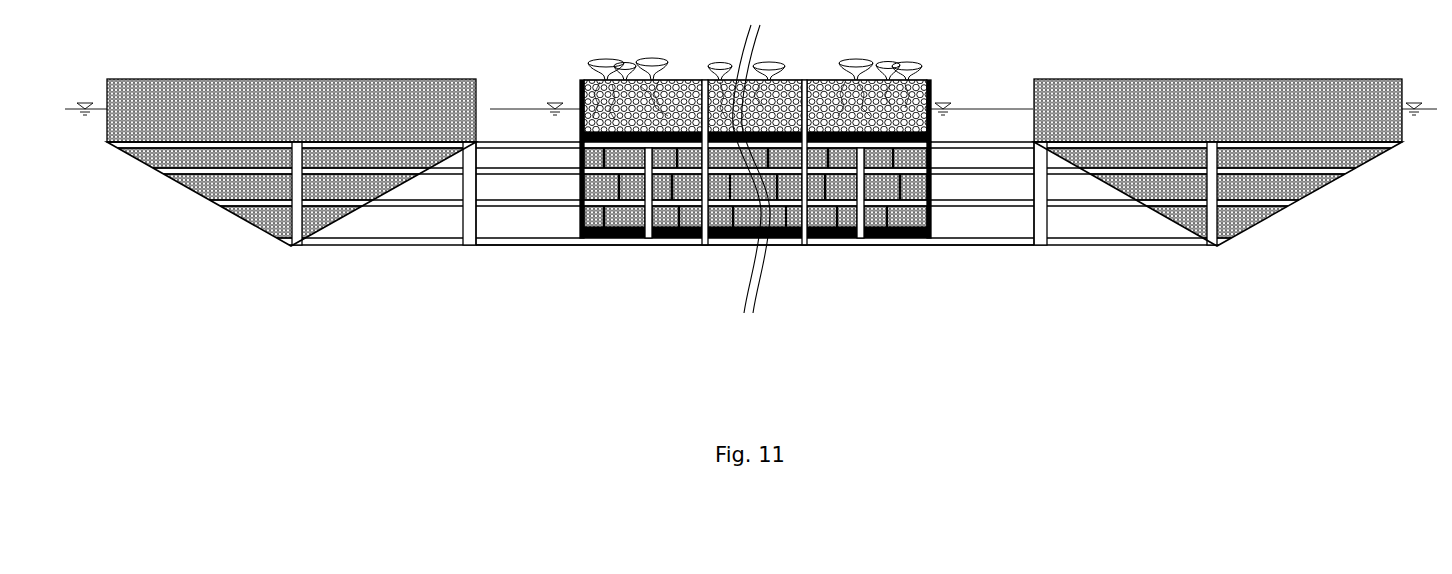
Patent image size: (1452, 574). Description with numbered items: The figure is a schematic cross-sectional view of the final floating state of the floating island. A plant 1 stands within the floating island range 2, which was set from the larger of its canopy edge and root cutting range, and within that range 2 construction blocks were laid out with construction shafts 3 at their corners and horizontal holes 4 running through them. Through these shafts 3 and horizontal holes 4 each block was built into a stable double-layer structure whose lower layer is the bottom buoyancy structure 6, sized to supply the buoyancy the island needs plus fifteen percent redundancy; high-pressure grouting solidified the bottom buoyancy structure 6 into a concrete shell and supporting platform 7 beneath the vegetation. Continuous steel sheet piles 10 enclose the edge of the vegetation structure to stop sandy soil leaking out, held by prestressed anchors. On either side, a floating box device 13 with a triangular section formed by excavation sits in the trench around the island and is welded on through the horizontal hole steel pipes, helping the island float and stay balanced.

The plant 1 is at (857, 67).
The floating island range 2 is at (808, 137).
The construction shaft 3 is at (1040, 240).
The horizontal hole 4 is at (960, 245).
The bottom buoyancy structure 6 is at (580, 158).
The supporting platform 7 is at (625, 238).
The continuous steel sheet pile 10 is at (580, 80).
The floating box device 13 is at (278, 79).